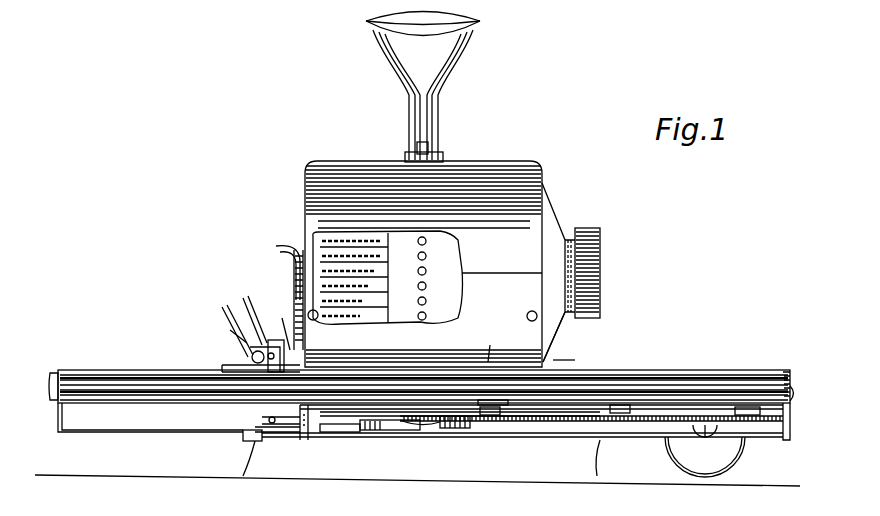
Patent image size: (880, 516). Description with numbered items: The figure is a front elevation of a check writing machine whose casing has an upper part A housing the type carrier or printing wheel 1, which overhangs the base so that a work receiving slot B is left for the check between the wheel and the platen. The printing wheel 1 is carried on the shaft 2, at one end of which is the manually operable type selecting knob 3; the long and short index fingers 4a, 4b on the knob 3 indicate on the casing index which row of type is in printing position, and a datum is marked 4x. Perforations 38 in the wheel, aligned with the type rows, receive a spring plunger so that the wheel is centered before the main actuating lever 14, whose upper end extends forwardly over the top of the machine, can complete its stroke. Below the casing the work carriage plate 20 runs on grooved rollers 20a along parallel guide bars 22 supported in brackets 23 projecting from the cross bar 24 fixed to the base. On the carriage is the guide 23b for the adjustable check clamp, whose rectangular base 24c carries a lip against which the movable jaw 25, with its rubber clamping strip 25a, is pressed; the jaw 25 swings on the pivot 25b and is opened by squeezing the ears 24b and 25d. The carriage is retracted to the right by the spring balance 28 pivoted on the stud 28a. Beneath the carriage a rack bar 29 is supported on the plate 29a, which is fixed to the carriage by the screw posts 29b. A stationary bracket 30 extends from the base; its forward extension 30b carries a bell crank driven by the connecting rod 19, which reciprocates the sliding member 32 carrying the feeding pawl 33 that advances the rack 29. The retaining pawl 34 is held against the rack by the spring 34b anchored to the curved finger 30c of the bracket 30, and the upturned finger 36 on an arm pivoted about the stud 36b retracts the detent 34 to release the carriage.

The main actuating lever 14 is at (413, 97).
The upper part of casing A is at (305, 186).
The type carrier or printing wheel 1 is at (388, 277).
The perforations 38 is at (419, 288).
The rubber clamping strip 25a is at (312, 345).
The short index finger 4b is at (560, 242).
The type selecting knob 3 is at (598, 230).
The long index finger 4a is at (546, 348).
The reference line 4x is at (185, 292).
The shaft 2 is at (290, 257).
The jaw pivot 25b is at (256, 300).
The ear 24b is at (224, 308).
The clamp base 24c is at (240, 338).
The guide 23b is at (252, 357).
The ear 25d is at (276, 328).
The movable jaw 25 is at (276, 345).
The work receiving slot B is at (491, 343).
The guide bars 22 is at (102, 378).
The carriage plate 20 is at (725, 385).
The brackets 23 is at (55, 404).
The cross bar 24 is at (194, 426).
The stud 36b is at (240, 453).
The spring 34b is at (270, 419).
The curved finger 30c is at (282, 428).
The upturned finger 36 is at (306, 440).
The retaining pawl 34 is at (460, 409).
The connecting rod 19 is at (337, 433).
The forward extension of bracket 30b is at (385, 431).
The carriage feeding pawl 33 is at (410, 425).
The sliding member 32 is at (452, 430).
The screw posts or studs 29b is at (492, 417).
The stationary bracket 30 is at (522, 425).
The rack supporting plate 29a is at (588, 420).
The rollers 20a is at (490, 402).
The rack bar 29 is at (644, 420).
The spring balance 28 is at (720, 458).
The stud 28a is at (708, 438).